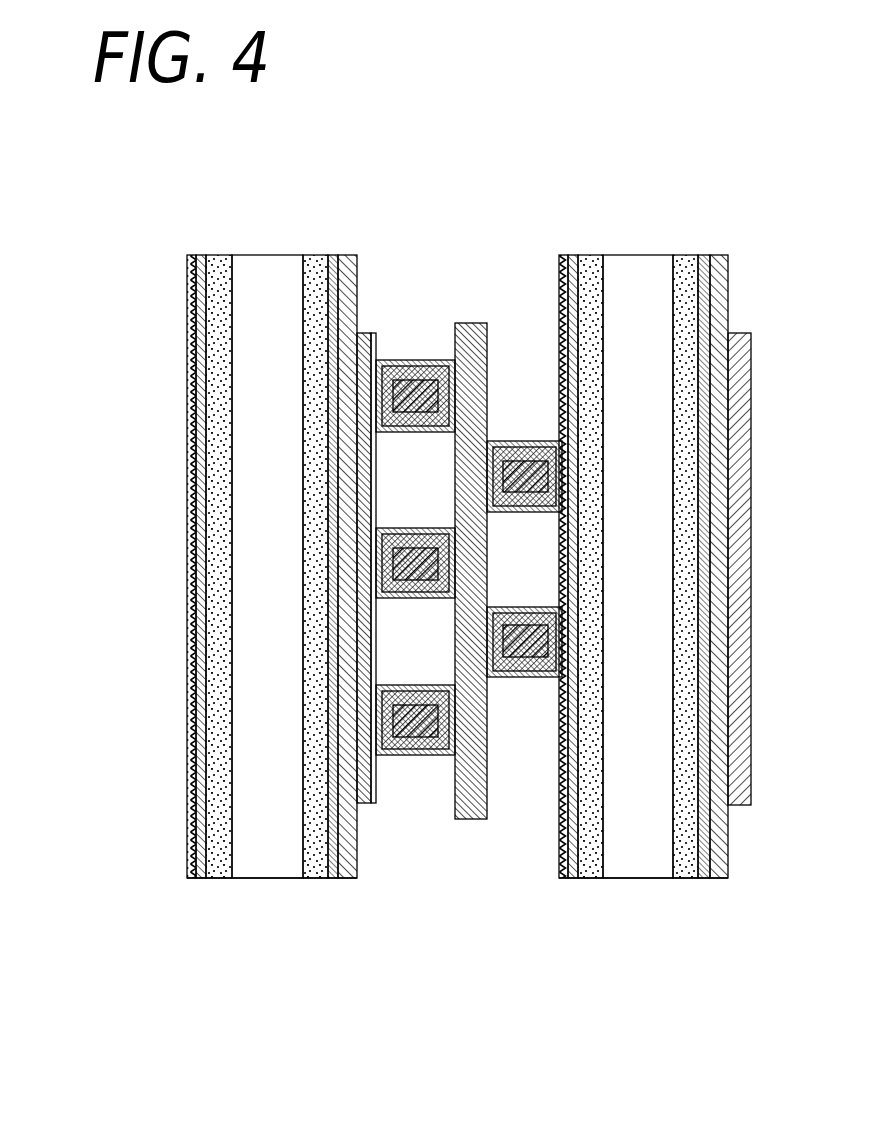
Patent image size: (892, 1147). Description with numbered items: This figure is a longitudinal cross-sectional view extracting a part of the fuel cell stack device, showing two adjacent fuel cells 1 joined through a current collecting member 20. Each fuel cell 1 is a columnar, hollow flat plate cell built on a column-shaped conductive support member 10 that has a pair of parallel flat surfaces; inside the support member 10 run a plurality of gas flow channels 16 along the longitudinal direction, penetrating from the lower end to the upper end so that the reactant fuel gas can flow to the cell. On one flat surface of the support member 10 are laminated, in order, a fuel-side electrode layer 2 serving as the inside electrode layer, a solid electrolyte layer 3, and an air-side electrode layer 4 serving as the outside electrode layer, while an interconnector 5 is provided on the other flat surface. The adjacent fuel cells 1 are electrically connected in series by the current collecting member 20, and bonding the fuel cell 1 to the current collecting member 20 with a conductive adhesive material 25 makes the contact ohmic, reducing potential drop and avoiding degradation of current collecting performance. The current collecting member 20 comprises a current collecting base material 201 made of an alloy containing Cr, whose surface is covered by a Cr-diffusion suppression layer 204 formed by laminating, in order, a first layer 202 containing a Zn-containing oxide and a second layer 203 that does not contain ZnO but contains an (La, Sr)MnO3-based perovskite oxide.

The fuel cell 1 is at (168, 423).
The fuel-side electrode layer 2 is at (335, 258).
The solid electrolyte layer 3 is at (352, 256).
The air-side electrode layer 4 is at (360, 335).
The interconnector 5 is at (201, 262).
The conductive support member 10 is at (222, 273).
The gas flow channels 16 is at (245, 293).
The current collecting member 20 is at (475, 323).
The conductive adhesive material 25 is at (193, 878).
The current collecting base material 201 is at (412, 727).
The first layer 202 is at (507, 440).
The second layer 203 is at (525, 440).
The Cr-diffusion suppression layer 204 is at (613, 137).